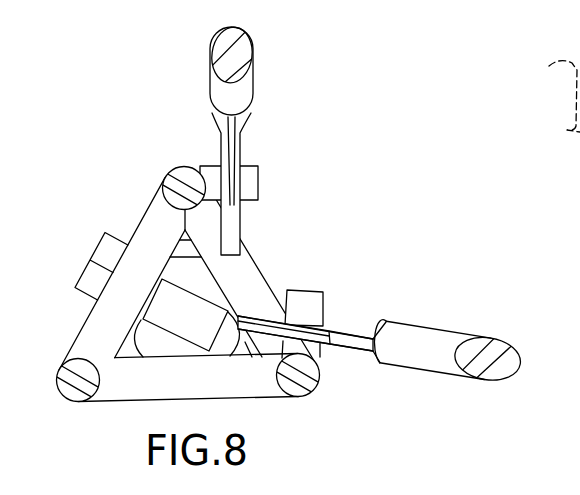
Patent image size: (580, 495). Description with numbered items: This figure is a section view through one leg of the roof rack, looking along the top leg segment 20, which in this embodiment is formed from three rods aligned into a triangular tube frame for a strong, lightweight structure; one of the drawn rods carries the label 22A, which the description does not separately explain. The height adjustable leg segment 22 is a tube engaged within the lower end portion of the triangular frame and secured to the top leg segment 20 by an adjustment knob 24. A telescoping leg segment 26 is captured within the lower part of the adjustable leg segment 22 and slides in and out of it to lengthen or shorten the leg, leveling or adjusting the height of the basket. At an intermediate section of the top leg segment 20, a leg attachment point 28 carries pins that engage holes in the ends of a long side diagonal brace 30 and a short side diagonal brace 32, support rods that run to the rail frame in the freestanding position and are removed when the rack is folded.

The top leg segment 20 is at (181, 176).
The height adjustable leg segment 22 is at (172, 277).
The frame rod 22A is at (155, 220).
The adjustment knob 24 is at (108, 263).
The telescoping leg segment 26 is at (549, 66).
The leg attachment point 28 is at (245, 182).
The long side diagonal brace 30 is at (237, 92).
The short side diagonal brace 32 is at (423, 345).